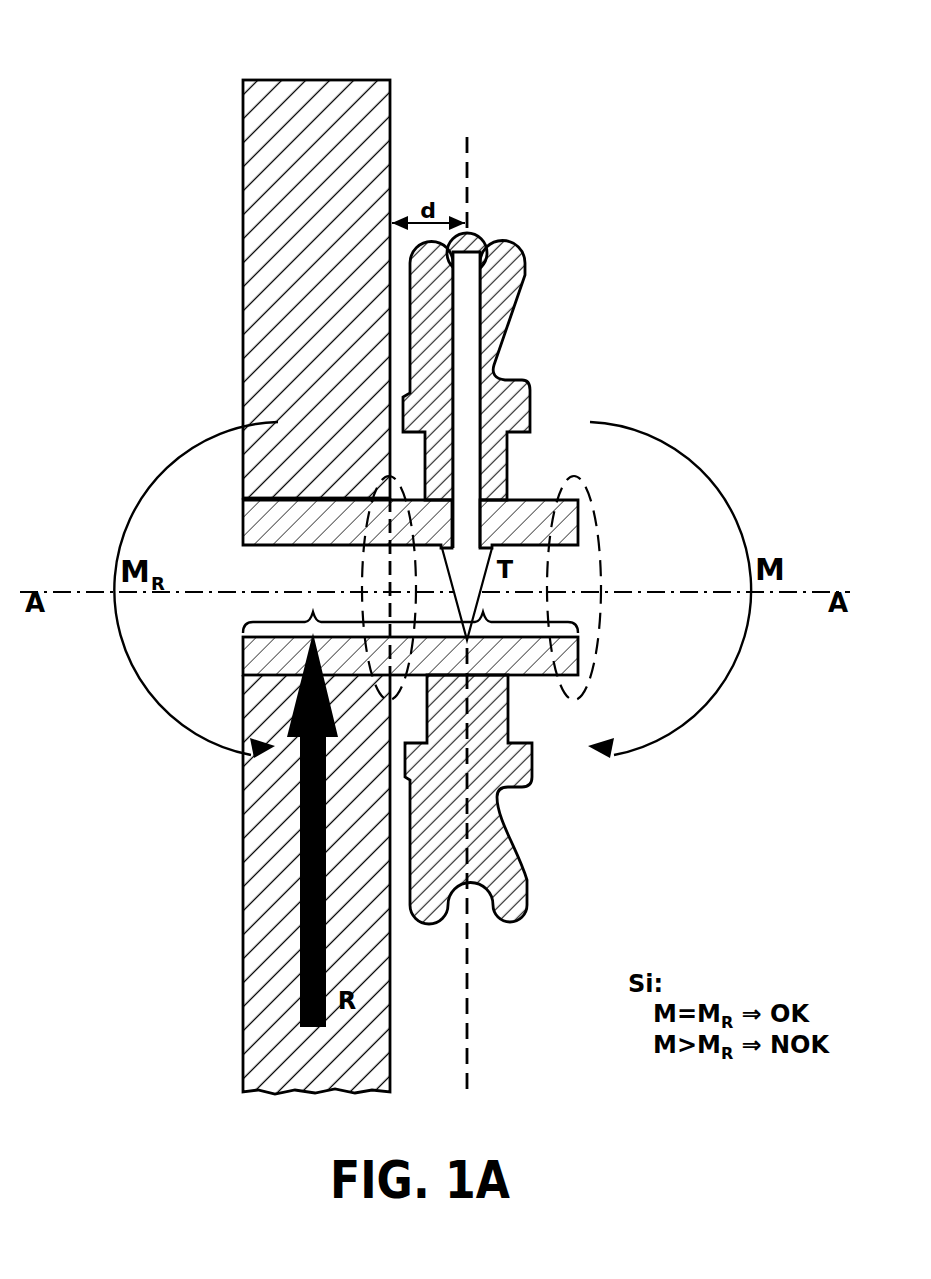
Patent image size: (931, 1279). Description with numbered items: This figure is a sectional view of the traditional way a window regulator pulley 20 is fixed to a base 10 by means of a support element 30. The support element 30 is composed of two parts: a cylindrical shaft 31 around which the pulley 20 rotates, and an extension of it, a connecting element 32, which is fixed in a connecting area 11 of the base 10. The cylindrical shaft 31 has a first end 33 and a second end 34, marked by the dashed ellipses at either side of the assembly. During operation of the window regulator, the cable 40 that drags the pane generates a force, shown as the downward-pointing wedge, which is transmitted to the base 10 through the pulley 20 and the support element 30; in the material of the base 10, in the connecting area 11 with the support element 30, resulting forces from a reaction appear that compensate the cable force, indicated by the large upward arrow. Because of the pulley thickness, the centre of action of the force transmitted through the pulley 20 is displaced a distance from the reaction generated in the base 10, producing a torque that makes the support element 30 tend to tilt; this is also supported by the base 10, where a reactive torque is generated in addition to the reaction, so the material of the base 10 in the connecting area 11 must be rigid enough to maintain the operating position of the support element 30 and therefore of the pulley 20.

The base 10 is at (345, 155).
The connecting area 11 is at (263, 603).
The pulley 20 is at (505, 272).
The support element 30 is at (522, 510).
The cylindrical shaft 31 is at (485, 617).
The connecting element 32 is at (313, 613).
The first end 33 is at (363, 560).
The second end 34 is at (588, 678).
The cable 40 is at (483, 243).